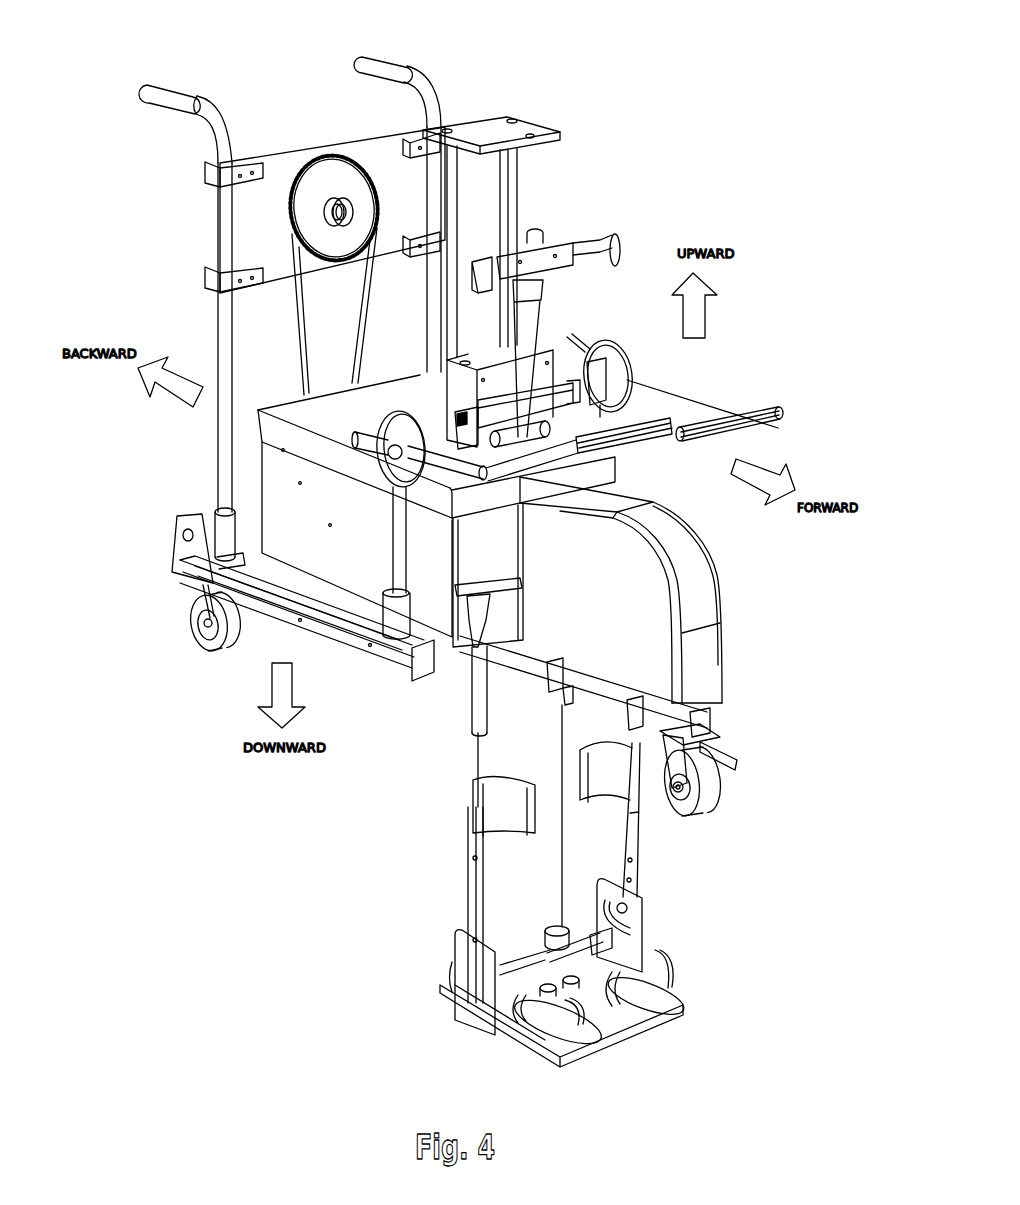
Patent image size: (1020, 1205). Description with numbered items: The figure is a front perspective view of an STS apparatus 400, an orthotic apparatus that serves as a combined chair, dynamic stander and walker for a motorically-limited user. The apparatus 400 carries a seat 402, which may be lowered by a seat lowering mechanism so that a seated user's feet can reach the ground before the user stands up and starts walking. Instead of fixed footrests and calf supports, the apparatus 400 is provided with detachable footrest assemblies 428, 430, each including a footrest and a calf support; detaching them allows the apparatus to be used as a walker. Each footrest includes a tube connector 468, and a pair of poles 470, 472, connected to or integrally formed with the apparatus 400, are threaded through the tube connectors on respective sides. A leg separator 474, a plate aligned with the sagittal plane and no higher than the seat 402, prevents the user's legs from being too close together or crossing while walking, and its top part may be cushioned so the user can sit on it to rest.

The STS apparatus 400 is at (698, 93).
The seat 402 is at (334, 430).
The footrest assembly 428 is at (445, 912).
The footrest assembly 430 is at (665, 900).
The tube connector 468 is at (558, 923).
The pole 470 is at (467, 707).
The pole 472 is at (563, 705).
The leg separator 474 is at (705, 562).